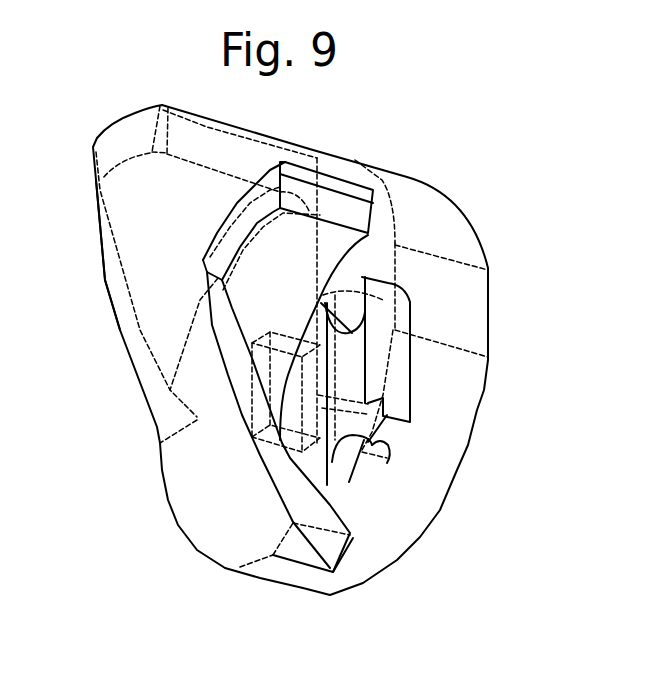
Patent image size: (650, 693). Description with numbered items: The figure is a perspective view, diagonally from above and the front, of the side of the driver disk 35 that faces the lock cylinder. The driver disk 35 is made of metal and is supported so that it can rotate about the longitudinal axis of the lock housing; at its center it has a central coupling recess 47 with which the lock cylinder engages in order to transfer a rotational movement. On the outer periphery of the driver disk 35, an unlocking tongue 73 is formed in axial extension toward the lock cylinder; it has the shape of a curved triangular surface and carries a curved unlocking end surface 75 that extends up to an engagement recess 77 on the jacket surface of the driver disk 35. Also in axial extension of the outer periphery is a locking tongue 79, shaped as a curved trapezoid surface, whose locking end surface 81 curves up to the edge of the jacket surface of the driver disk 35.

The driver disk 35 is at (505, 303).
The central coupling recess 47 is at (398, 390).
The unlocking tongue 73 is at (303, 552).
The unlocking end surface 75 is at (308, 510).
The engagement recess 77 is at (323, 240).
The locking tongue 79 is at (128, 207).
The locking end surface 81 is at (112, 300).